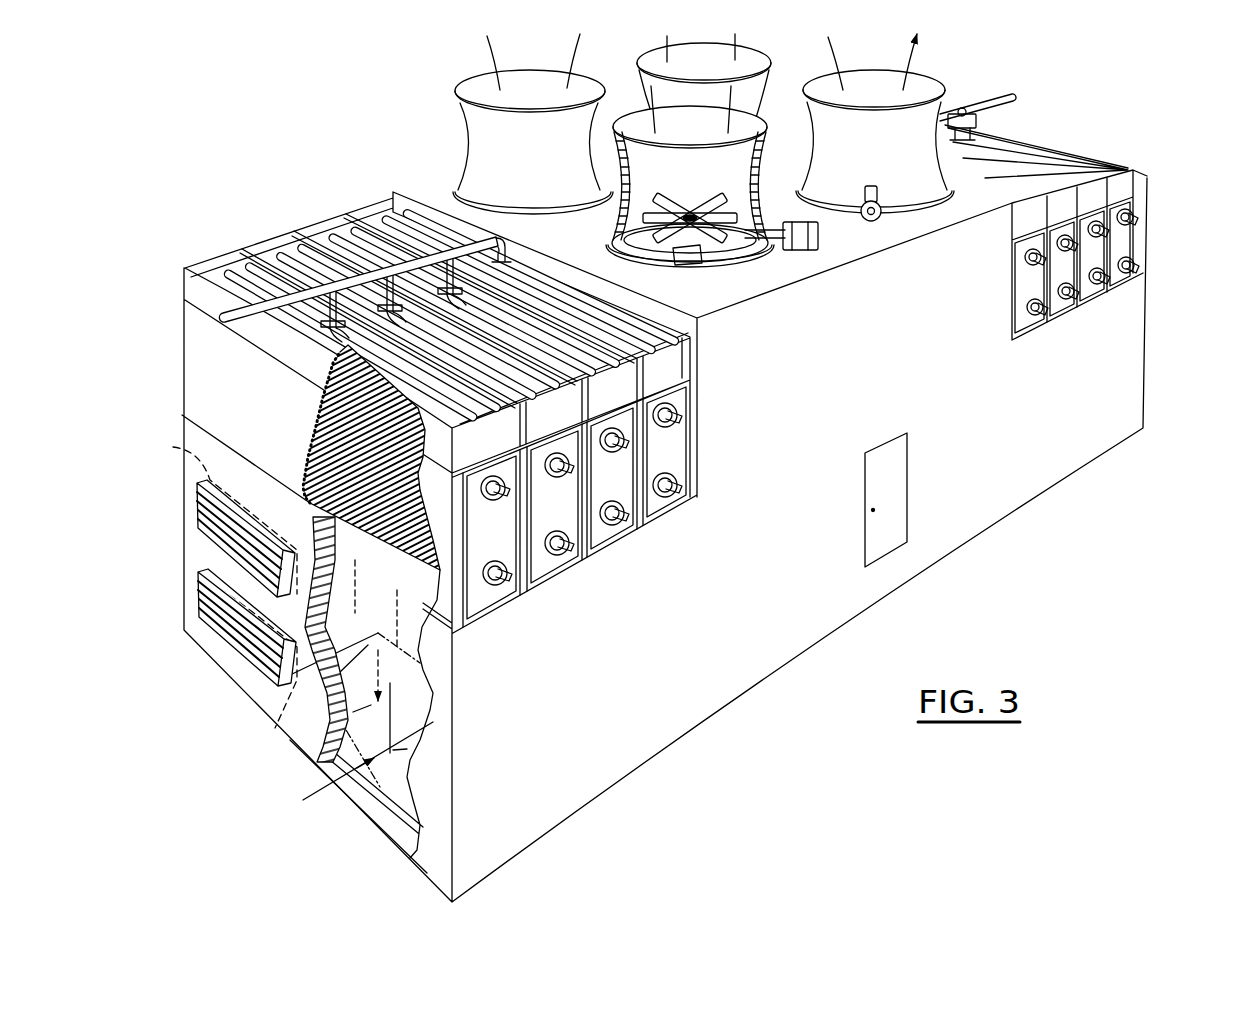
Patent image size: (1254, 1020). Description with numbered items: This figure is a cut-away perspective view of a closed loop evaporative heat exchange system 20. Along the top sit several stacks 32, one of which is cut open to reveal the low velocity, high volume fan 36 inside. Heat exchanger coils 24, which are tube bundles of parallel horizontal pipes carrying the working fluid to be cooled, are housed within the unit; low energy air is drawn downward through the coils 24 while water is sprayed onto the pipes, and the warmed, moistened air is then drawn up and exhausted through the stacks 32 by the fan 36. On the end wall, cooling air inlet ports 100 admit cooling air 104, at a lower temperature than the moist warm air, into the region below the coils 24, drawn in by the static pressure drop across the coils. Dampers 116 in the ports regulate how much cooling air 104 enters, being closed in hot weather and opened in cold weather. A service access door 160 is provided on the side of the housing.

The closed loop evaporative heat exchange system 20 is at (1159, 135).
The heat exchanger coils 24 is at (502, 544).
The stack 32 is at (712, 147).
The fan 36 is at (698, 200).
The cooling air inlet ports 100 is at (174, 447).
The cooling air 104 is at (197, 594).
The dampers 116 is at (202, 512).
The service access door 160 is at (919, 500).